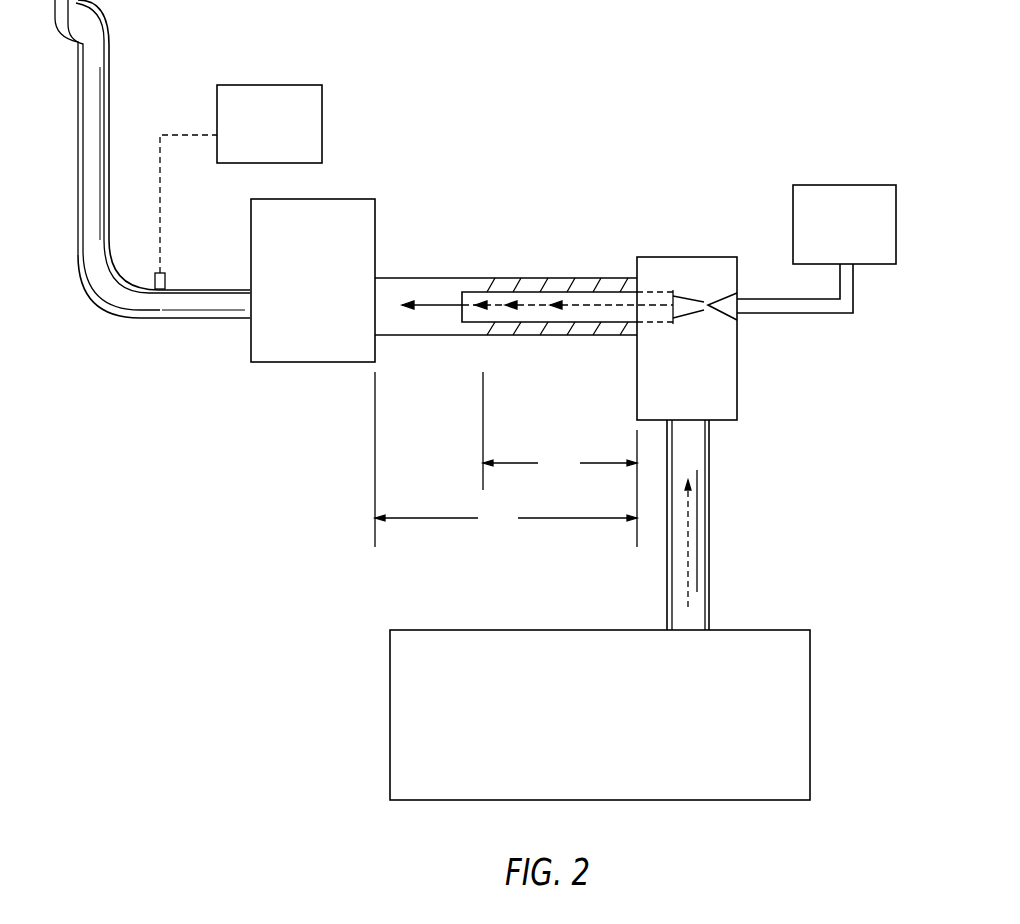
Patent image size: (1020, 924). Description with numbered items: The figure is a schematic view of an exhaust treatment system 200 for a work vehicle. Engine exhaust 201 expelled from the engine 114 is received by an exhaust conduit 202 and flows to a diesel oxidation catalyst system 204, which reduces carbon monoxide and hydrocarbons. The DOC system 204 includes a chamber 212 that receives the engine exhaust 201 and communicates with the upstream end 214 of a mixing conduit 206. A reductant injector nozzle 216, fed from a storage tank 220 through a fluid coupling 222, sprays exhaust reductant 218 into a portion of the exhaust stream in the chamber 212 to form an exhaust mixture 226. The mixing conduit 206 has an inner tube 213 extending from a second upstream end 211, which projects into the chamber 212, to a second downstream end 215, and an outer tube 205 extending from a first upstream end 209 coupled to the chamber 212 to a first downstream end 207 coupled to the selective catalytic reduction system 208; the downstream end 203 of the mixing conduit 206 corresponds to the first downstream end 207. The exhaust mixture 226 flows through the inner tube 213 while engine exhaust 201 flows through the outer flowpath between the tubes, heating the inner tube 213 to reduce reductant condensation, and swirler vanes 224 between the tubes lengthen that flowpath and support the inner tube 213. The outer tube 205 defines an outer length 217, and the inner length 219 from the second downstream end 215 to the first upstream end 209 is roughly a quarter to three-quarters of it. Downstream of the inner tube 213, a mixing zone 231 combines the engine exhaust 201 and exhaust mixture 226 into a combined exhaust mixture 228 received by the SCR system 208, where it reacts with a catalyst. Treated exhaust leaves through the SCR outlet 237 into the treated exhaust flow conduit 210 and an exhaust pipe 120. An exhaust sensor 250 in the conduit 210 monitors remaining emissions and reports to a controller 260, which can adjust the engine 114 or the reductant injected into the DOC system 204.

The exhaust pipe 120 is at (78, 102).
The treated exhaust flow conduit 210 is at (157, 320).
The controller 260 is at (289, 138).
The exhaust sensor 250 is at (168, 283).
The selective catalytic reduction system 208 is at (332, 301).
The SCR outlet 237 is at (252, 303).
The downstream end of the mixing conduit 203 is at (372, 279).
The outer tube 205 is at (433, 278).
The combined exhaust mixture 228 is at (428, 310).
The first downstream end of the outer tube 207 is at (376, 305).
The second downstream end of the inner tube 215 is at (463, 305).
The exhaust mixture 226 is at (537, 297).
The swirler vanes 224 is at (560, 287).
The inner tube 213 is at (532, 285).
The first upstream end of the outer tube 209 is at (633, 310).
The mixing zone 231 is at (417, 350).
The chamber 212 is at (637, 387).
The upstream end of the mixing conduit 214 is at (653, 292).
The second upstream end of the inner tube 211 is at (673, 312).
The exhaust reductant 218 is at (690, 317).
The reductant injector nozzle 216 is at (730, 297).
The storage tank 220 is at (862, 241).
The fluid coupling 222 is at (836, 308).
The diesel oxidation catalyst system 204 is at (824, 412).
The exhaust conduit 202 is at (710, 532).
The engine exhaust 201 is at (685, 562).
The inner length 219 is at (560, 459).
The outer length 217 is at (506, 459).
The mixing conduit 206 is at (534, 155).
The exhaust treatment system 200 is at (752, 156).
The engine 114 is at (614, 731).